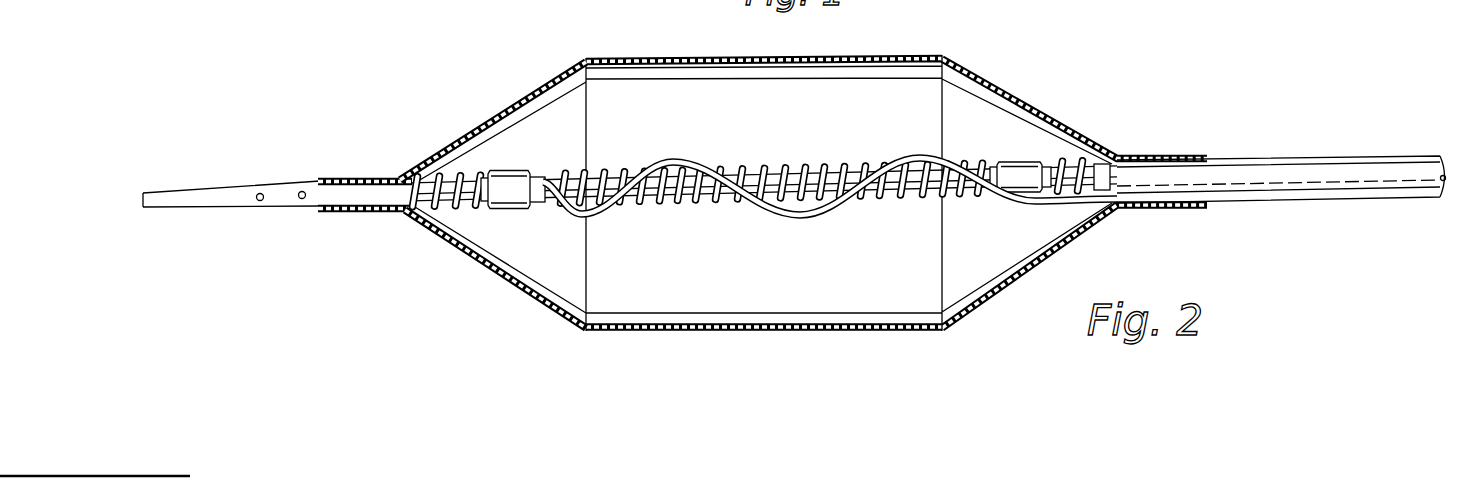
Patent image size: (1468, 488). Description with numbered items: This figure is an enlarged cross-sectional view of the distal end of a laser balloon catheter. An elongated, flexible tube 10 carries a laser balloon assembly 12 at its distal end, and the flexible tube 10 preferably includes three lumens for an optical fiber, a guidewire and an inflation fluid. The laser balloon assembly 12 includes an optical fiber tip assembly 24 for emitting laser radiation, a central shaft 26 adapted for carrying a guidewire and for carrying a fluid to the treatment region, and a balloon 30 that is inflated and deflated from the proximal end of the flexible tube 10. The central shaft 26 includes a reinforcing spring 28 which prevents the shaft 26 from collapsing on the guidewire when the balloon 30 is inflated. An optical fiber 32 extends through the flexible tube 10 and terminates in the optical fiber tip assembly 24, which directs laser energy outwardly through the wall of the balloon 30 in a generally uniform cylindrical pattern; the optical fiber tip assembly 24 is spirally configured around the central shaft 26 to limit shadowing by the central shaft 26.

The flexible tube 10 is at (1268, 158).
The laser balloon assembly 12 is at (1013, 80).
The optical fiber tip assembly 24 is at (918, 157).
The central shaft 26 is at (813, 171).
The reinforcing spring 28 is at (765, 171).
The balloon 30 is at (500, 116).
The optical fiber 32 is at (1323, 159).